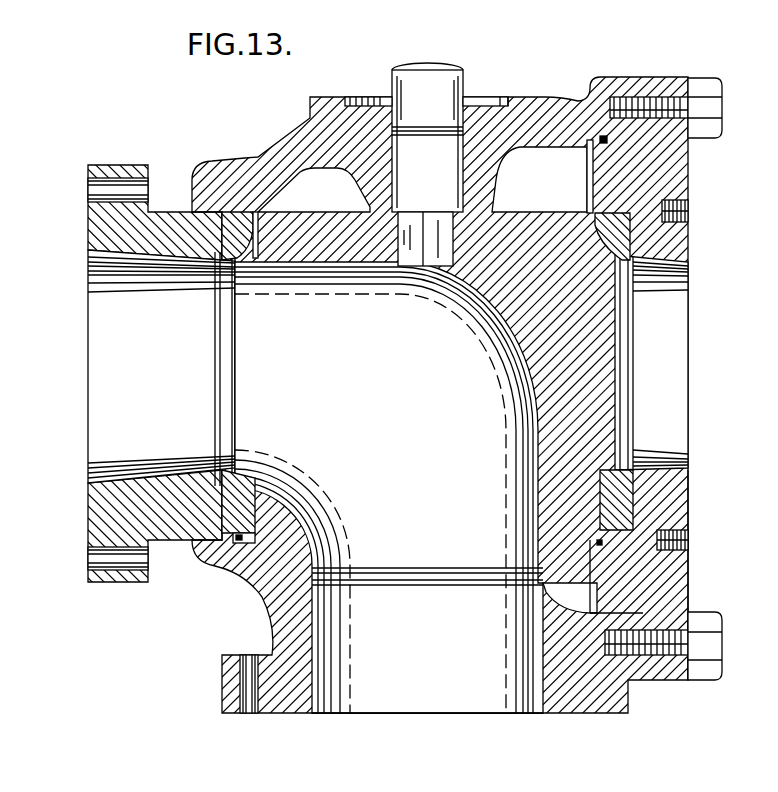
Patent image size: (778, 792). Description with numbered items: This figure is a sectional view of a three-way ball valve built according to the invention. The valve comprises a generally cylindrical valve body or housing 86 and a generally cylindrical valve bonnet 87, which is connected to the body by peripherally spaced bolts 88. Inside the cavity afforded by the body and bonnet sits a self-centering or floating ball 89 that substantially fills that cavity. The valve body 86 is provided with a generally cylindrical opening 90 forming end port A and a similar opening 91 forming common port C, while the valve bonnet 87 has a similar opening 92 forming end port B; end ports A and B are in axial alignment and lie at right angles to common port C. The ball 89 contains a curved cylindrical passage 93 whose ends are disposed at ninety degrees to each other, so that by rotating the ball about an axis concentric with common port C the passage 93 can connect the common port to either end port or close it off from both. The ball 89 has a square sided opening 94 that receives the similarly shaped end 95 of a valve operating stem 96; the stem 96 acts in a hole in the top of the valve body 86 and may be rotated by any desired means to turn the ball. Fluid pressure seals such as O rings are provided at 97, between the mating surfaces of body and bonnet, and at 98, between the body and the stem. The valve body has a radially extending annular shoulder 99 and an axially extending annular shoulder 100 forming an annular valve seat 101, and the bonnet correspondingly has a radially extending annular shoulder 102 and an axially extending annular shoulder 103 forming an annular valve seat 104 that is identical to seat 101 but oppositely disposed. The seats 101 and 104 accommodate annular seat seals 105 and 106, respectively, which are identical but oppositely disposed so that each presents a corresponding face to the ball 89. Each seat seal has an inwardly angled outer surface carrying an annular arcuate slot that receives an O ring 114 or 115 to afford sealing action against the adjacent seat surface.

The valve body 86 is at (97, 521).
The valve bonnet 87 is at (678, 580).
The bolts 88 is at (706, 80).
The floating ball 89 is at (522, 347).
The opening forming end port A 90 is at (100, 309).
The opening forming common port C 91 is at (425, 705).
The opening forming end port B 92 is at (675, 337).
The curved cylindrical passage 93 is at (385, 420).
The square sided opening 94 is at (438, 275).
The stem end 95 is at (405, 265).
The valve operating stem 96 is at (430, 84).
The seal 97 is at (600, 136).
The seal 98 is at (466, 128).
The radially extending annular shoulder 99 is at (205, 497).
The axially extending annular shoulder 100 is at (246, 540).
The annular valve seat 101 is at (221, 547).
The radially extending annular shoulder 102 is at (651, 493).
The axially extending annular shoulder 103 is at (602, 546).
The annular valve seat 104 is at (632, 527).
The seat seal 105 is at (268, 489).
The seat seal 106 is at (600, 519).
The O ring 114 is at (240, 208).
The O ring 115 is at (606, 222).